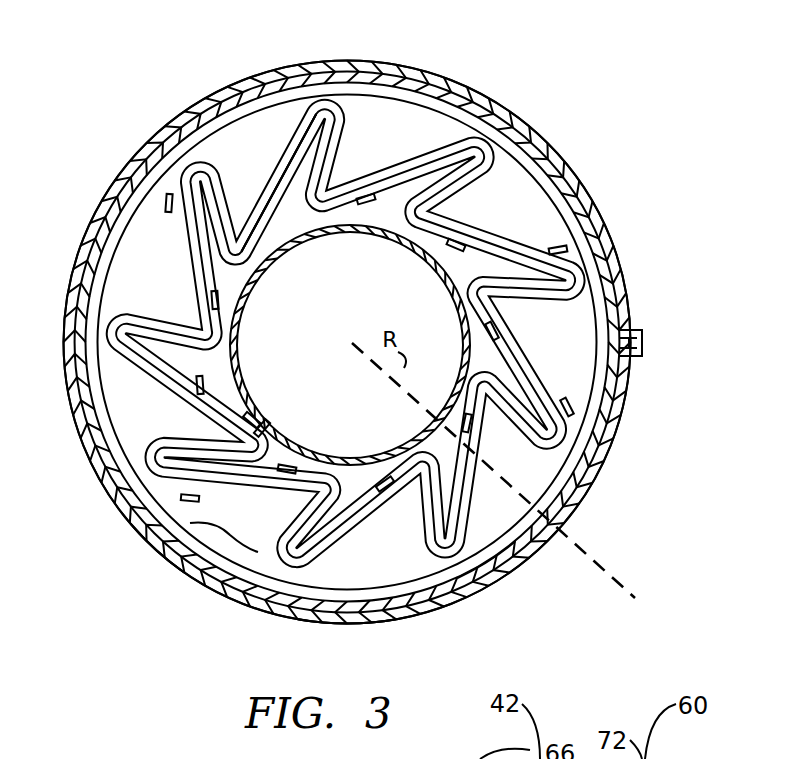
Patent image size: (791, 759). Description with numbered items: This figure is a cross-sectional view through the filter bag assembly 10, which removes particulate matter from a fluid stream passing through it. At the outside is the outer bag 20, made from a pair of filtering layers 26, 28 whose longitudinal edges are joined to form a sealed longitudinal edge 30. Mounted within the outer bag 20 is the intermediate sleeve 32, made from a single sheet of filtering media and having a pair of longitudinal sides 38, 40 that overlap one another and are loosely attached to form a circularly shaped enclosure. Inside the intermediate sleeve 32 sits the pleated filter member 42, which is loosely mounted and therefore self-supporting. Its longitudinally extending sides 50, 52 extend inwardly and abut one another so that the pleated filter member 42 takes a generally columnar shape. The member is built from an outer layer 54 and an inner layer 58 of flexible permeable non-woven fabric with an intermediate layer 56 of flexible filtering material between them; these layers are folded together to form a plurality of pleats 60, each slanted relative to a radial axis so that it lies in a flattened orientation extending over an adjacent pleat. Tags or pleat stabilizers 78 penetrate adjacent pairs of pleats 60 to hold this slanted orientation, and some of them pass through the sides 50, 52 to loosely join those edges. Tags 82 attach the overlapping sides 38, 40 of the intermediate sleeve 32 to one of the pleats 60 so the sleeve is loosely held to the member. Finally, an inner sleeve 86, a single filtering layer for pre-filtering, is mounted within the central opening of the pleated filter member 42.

The filter bag assembly 10 is at (650, 197).
The outer bag 20 is at (613, 451).
The filtering layer 26 is at (330, 61).
The filtering layer 28 is at (360, 70).
The sealed longitudinal edge 30 is at (646, 343).
The intermediate sleeve 32 is at (505, 574).
The longitudinal side 38 is at (240, 555).
The longitudinal side 40 is at (397, 627).
The pleated filter member 42 is at (273, 167).
The longitudinally extending side 50 is at (240, 393).
The longitudinally extending side 52 is at (264, 438).
The outer layer 54 is at (170, 210).
The intermediate layer 56 is at (202, 278).
The inner layer 58 is at (196, 298).
The pleats 60 is at (300, 186).
The tags or pleat stabilizers 78 is at (275, 195).
The tags 82 is at (154, 551).
The inner sleeve 86 is at (385, 236).